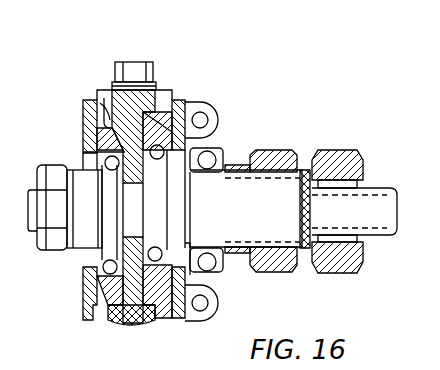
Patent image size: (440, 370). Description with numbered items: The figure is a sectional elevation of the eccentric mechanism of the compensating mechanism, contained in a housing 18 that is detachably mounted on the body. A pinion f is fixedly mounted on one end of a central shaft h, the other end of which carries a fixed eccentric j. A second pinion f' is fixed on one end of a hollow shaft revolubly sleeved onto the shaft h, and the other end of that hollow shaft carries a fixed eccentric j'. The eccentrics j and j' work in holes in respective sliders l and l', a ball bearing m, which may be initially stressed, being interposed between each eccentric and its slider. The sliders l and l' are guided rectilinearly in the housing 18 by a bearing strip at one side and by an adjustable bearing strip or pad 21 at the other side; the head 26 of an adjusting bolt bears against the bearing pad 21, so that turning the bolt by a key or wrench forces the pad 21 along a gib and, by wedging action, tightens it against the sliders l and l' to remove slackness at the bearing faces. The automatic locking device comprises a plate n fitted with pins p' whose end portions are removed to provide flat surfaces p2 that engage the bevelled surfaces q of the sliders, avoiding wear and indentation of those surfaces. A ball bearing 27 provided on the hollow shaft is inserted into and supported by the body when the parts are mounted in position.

The head 26 is at (128, 62).
The adjustable bearing strip or pad 21 is at (168, 95).
The pins p' is at (99, 70).
The flat surfaces p2 is at (87, 84).
The housing 18 is at (88, 112).
The slider l' is at (172, 190).
The bevelled surfaces q is at (192, 126).
The slider l is at (96, 149).
The plate n is at (93, 152).
The eccentric j' is at (250, 184).
The pinion f' is at (287, 180).
The pinion f is at (343, 186).
The central shaft h is at (390, 197).
The eccentric j is at (65, 228).
The ball bearing m is at (95, 278).
The ball bearing 27 is at (225, 273).